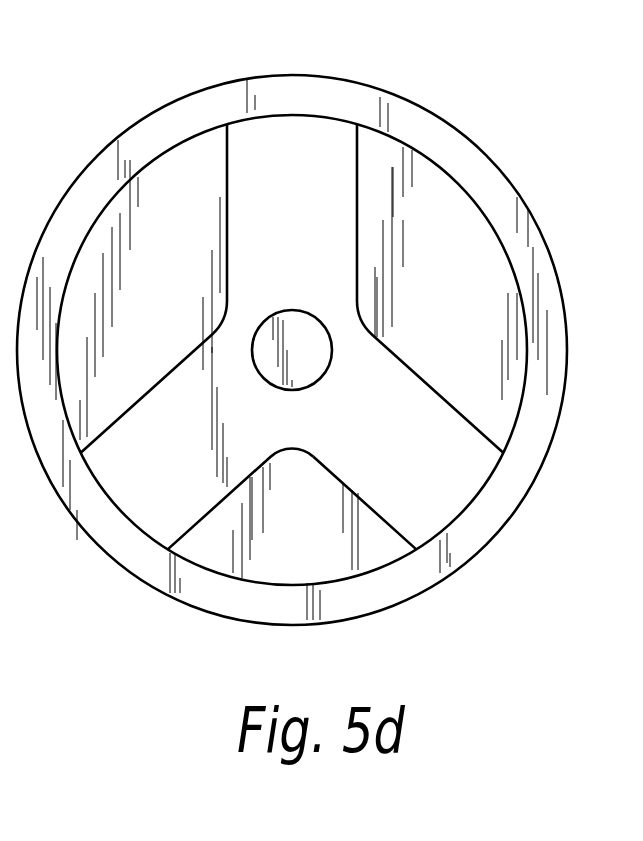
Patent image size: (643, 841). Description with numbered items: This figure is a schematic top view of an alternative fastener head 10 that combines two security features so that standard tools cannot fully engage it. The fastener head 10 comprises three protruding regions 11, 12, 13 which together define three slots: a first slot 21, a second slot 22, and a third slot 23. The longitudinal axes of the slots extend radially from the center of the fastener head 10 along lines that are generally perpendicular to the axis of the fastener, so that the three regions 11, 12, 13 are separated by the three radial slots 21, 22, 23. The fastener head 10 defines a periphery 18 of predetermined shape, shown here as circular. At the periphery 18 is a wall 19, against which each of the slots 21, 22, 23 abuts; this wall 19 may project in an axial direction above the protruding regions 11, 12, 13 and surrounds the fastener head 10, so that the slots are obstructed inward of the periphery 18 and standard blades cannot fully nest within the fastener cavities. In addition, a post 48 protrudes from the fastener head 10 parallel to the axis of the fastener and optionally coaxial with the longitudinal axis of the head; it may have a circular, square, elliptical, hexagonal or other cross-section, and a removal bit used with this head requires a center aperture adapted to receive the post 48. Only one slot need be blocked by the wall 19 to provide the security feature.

The fastener head 10 is at (320, 363).
The region 11 is at (488, 270).
The region 12 is at (333, 563).
The region 13 is at (120, 222).
The periphery 18 is at (292, 328).
The wall 19 is at (160, 137).
The first slot 21 is at (330, 147).
The second slot 22 is at (143, 488).
The third slot 23 is at (450, 503).
The post 48 is at (313, 377).